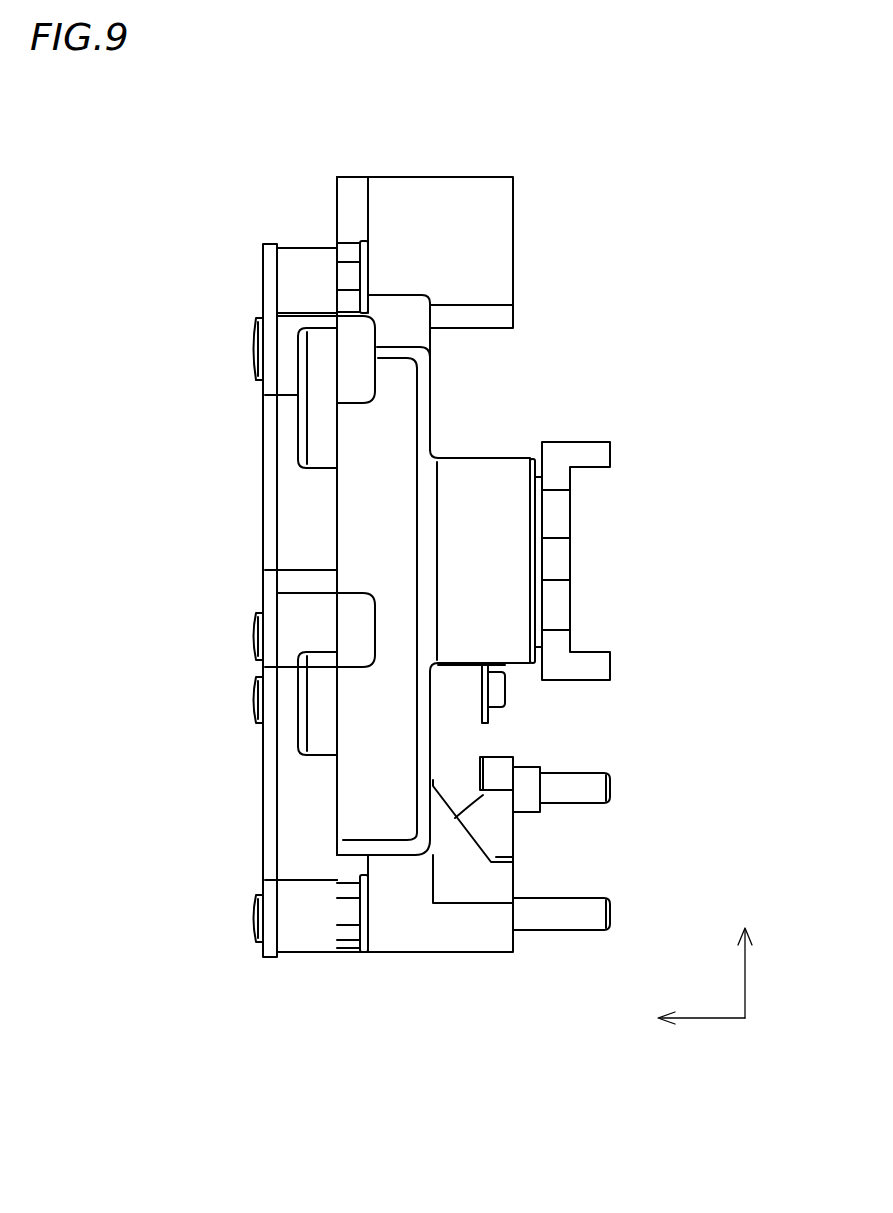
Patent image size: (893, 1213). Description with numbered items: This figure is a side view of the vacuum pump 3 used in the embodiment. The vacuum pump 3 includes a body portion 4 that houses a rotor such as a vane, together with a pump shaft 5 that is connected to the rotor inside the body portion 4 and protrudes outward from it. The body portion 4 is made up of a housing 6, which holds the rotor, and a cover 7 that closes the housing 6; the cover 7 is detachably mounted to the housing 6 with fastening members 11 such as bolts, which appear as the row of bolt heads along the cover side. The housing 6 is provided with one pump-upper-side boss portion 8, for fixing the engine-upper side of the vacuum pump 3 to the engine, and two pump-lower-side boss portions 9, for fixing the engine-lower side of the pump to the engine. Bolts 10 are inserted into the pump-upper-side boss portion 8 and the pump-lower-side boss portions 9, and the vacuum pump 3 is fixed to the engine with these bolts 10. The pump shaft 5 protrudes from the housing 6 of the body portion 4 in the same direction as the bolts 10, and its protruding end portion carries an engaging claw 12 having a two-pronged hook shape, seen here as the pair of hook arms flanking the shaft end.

The vacuum pump 3 is at (622, 177).
The body portion 4 is at (500, 102).
The pump shaft 5 is at (573, 557).
The housing 6 is at (430, 397).
The cover 7 is at (297, 933).
The pump-upper-side boss portion 8 is at (397, 238).
The pump-lower-side boss portion 9 is at (423, 935).
The bolt 10 is at (347, 240).
The fastening member 11 is at (253, 328).
The engaging claw 12 is at (610, 448).